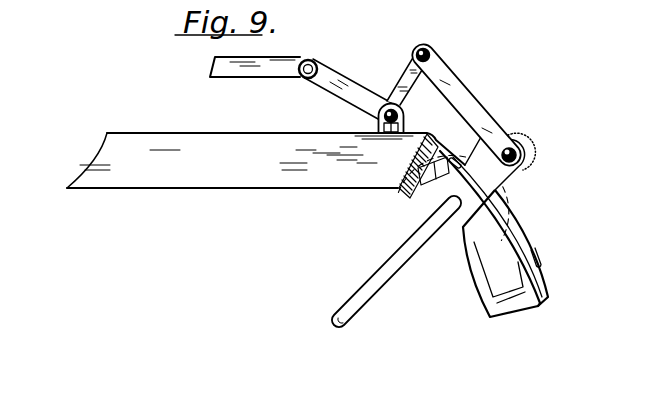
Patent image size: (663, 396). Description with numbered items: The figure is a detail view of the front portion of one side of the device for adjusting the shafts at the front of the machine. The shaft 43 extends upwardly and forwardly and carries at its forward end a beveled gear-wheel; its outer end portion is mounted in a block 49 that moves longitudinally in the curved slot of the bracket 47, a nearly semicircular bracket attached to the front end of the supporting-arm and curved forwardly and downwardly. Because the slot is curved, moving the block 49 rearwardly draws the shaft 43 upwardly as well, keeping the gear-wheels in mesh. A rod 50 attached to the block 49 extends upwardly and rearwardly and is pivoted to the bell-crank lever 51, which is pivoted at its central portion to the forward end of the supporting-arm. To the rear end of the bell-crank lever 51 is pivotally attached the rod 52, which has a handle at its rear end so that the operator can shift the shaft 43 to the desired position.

The shaft 43 is at (385, 283).
The bracket 47 is at (546, 275).
The block 49 is at (513, 177).
The rod 50 is at (476, 93).
The bell-crank lever 51 is at (403, 72).
The rod 52 is at (266, 72).